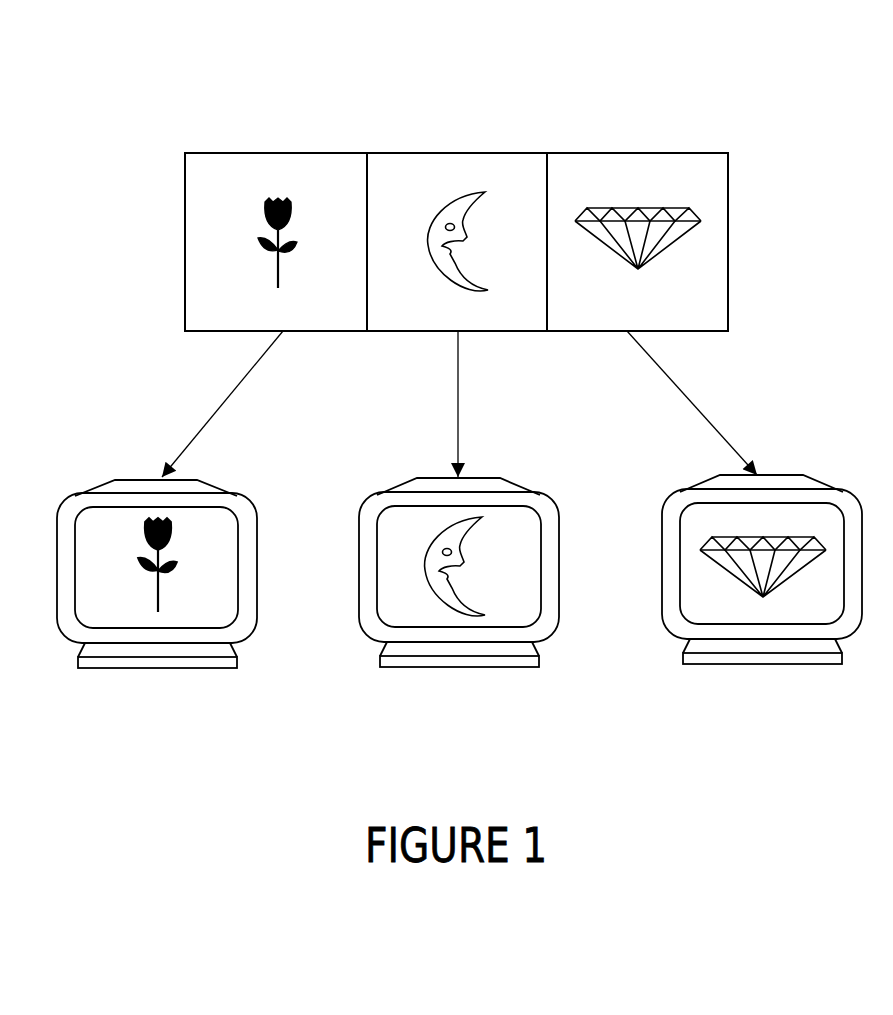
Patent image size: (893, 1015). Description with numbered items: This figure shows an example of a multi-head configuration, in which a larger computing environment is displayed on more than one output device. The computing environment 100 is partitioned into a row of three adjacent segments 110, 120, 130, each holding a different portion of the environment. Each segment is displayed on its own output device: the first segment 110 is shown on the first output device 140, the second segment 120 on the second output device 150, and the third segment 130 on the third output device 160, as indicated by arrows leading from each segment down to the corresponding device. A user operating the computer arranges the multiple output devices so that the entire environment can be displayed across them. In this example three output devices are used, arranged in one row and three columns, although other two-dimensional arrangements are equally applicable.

The computing environment 100 is at (273, 147).
The segment 110 is at (228, 152).
The segment 120 is at (417, 152).
The segment 130 is at (685, 152).
The output device 140 is at (112, 668).
The output device 150 is at (428, 667).
The output device 160 is at (728, 664).